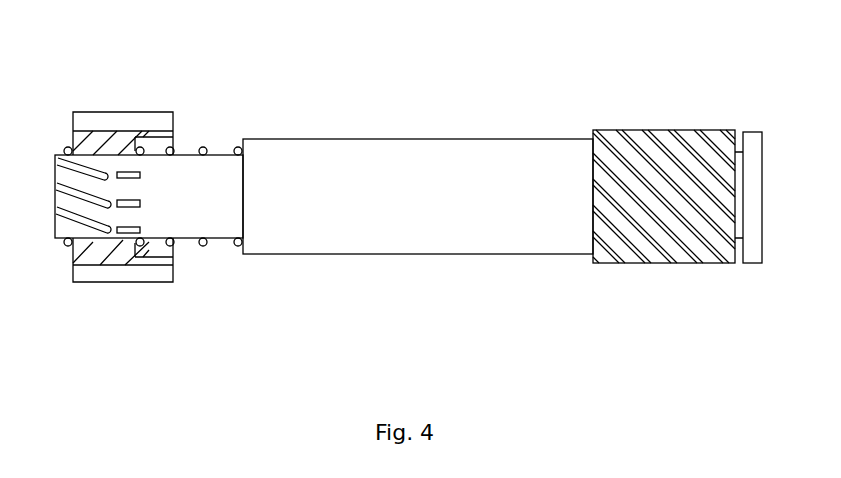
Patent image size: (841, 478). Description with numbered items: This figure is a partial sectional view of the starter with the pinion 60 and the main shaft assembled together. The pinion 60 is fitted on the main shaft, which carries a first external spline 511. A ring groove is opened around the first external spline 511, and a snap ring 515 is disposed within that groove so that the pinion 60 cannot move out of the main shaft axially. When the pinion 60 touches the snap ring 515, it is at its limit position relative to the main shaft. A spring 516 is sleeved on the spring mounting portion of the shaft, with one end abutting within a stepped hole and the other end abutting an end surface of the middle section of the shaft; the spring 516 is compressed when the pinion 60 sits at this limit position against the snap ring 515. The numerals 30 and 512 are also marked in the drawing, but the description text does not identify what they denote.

The connecting rod 30 is at (444, 160).
The pinion 60 is at (126, 123).
The first external spline 511 is at (96, 230).
The through holes 512 is at (130, 233).
The snap ring 515 is at (67, 147).
The spring 516 is at (203, 147).